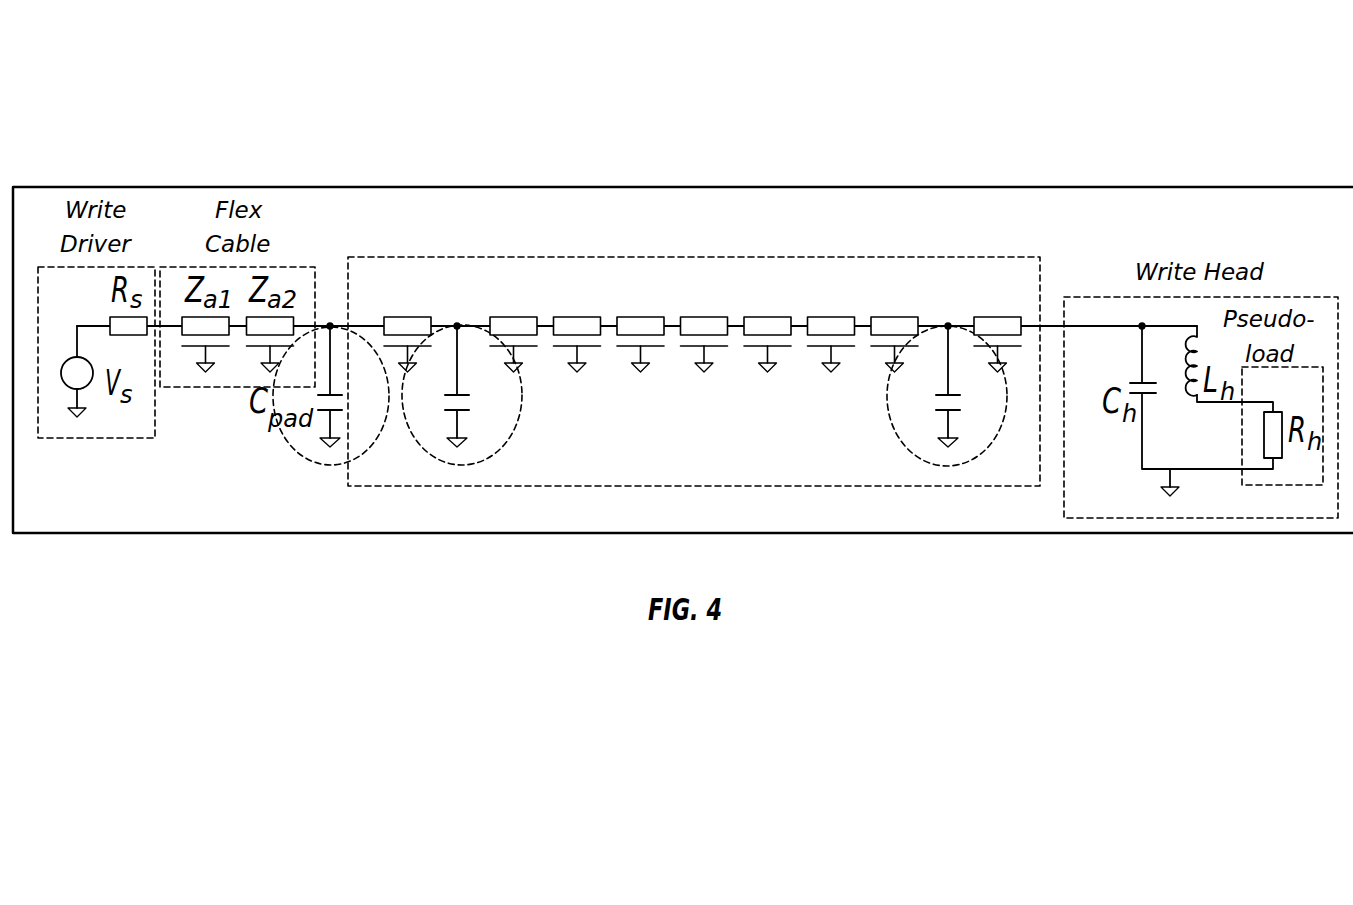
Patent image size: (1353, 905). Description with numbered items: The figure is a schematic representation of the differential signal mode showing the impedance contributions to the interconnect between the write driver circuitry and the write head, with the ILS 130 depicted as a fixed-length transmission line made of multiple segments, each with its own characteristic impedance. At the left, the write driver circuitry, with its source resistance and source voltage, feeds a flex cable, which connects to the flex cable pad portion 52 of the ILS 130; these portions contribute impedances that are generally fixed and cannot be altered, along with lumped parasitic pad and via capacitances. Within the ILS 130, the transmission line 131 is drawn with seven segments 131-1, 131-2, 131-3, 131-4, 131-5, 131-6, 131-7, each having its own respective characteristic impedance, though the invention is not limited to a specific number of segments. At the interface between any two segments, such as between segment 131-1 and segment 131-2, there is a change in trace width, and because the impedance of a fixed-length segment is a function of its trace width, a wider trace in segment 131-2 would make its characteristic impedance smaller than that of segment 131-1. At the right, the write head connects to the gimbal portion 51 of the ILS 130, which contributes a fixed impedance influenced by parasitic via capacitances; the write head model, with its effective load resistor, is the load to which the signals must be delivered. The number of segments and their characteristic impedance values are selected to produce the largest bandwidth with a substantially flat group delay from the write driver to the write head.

The ILS 130 is at (348, 120).
The flex cable pad portion 52 is at (478, 180).
The transmission line 131 is at (482, 180).
The gimbal portion 51 is at (888, 180).
The transmission line segment 131-1 is at (525, 336).
The transmission line segment 131-2 is at (588, 336).
The transmission line segment 131-3 is at (645, 336).
The transmission line segment 131-4 is at (715, 336).
The transmission line segment 131-5 is at (770, 336).
The transmission line segment 131-6 is at (840, 336).
The transmission line segment 131-7 is at (902, 336).